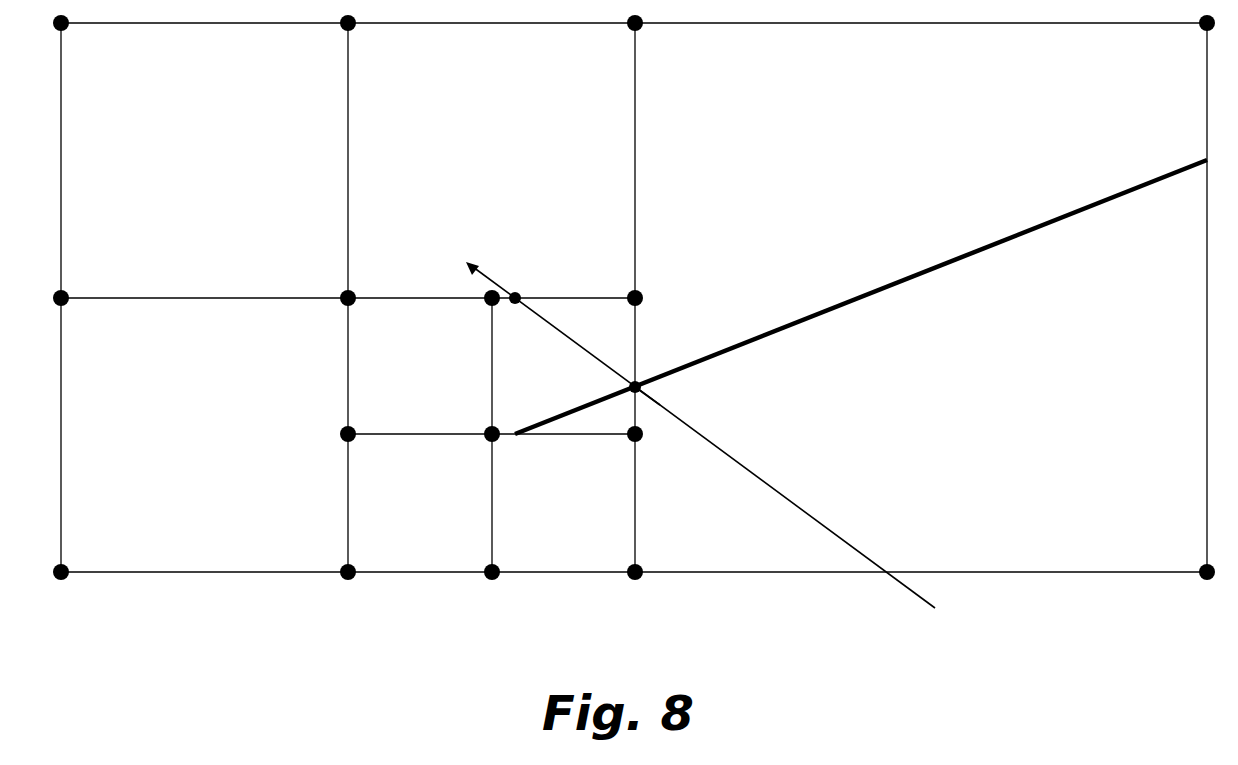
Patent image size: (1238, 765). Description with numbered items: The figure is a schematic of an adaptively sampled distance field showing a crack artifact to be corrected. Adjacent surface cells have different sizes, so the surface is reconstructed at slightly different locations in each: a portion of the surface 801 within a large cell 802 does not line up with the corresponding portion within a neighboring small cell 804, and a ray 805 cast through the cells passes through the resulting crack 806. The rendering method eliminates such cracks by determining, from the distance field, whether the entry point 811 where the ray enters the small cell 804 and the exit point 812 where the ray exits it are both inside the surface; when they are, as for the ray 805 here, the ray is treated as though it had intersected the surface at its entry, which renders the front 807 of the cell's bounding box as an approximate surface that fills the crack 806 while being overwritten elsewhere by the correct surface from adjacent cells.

The portion of the surface 801 is at (940, 268).
The large cell 802 is at (888, 100).
The small cell 804 is at (530, 381).
The ray 805 is at (927, 606).
The crack 806 is at (657, 379).
The front of the bounding box 807 is at (637, 322).
The entry point 811 is at (639, 397).
The exit point 812 is at (520, 293).